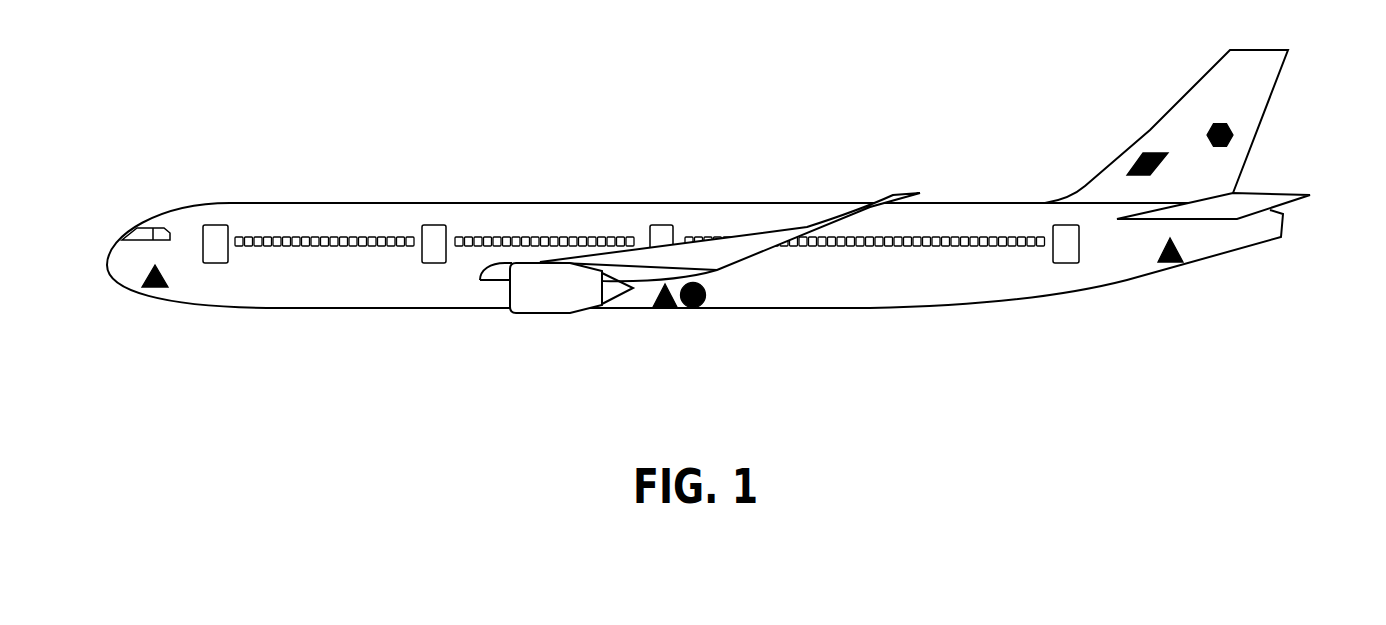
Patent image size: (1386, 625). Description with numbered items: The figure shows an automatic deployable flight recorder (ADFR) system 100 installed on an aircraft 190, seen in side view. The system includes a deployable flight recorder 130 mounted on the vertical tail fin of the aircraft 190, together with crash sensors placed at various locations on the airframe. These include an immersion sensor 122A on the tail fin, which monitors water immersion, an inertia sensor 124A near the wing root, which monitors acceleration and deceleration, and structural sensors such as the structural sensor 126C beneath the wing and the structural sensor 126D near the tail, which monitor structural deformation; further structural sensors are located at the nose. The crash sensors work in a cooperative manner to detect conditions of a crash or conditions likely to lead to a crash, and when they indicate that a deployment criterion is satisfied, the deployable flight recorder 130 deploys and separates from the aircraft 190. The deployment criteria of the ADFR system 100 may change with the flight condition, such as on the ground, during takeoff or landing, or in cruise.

The automatic deployable flight recorder (ADFR) system 100 is at (217, 137).
The aircraft 190 is at (916, 294).
The immersion sensor 122A is at (1235, 143).
The inertia sensor 124A is at (706, 297).
The structural sensor 126C is at (661, 308).
The structural sensor 126D is at (1165, 262).
The deployable flight recorder 130 is at (1140, 155).